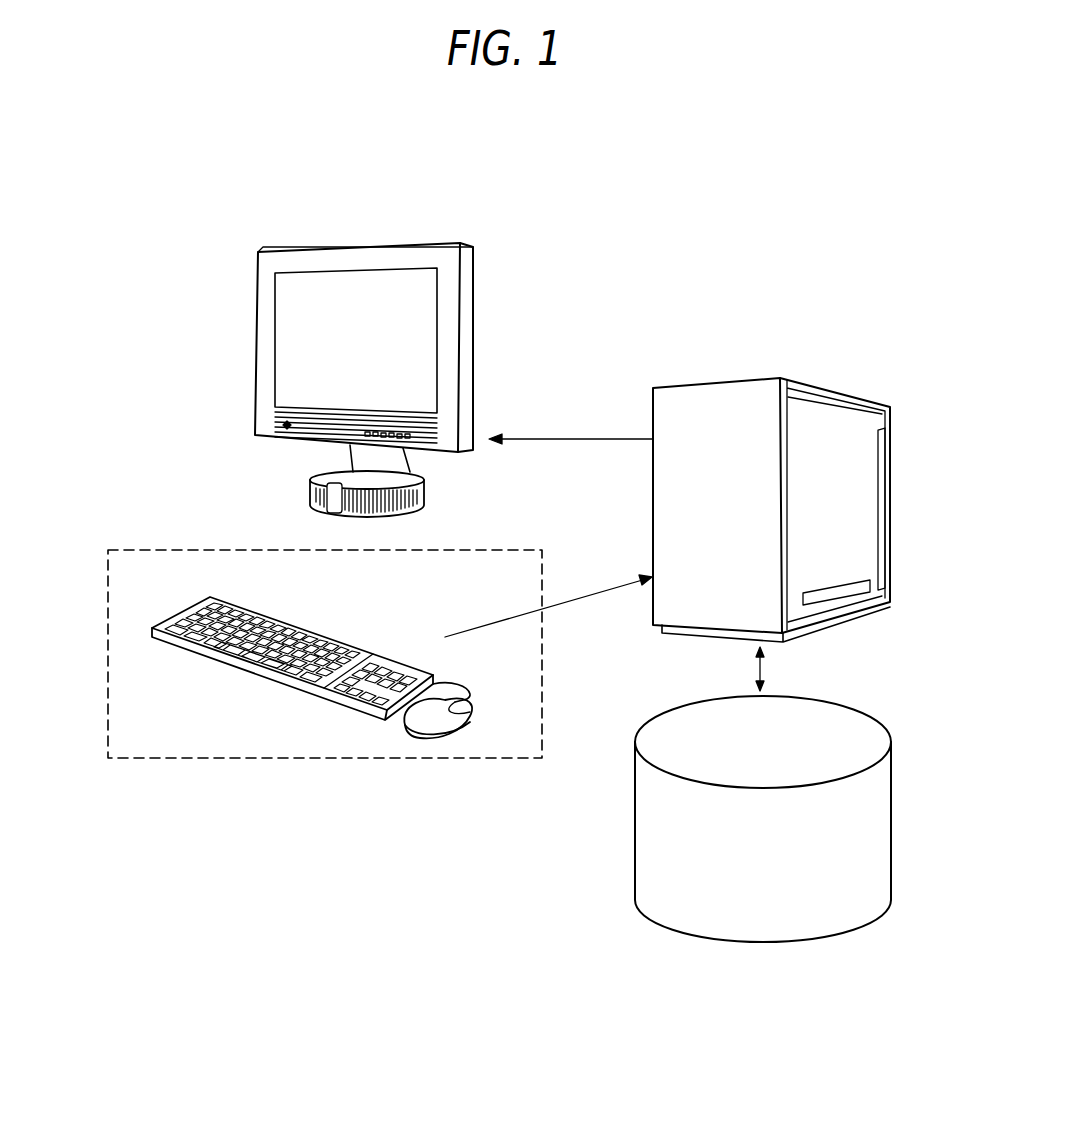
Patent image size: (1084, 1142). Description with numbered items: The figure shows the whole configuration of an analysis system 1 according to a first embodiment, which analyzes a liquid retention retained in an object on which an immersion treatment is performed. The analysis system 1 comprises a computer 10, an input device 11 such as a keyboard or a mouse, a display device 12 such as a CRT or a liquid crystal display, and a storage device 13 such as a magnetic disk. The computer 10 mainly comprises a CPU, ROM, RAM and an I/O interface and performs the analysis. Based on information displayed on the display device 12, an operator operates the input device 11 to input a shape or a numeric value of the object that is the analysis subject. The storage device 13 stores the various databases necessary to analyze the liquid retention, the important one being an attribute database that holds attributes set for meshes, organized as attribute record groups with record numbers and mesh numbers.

The analysis system 1 is at (690, 223).
The computer 10 is at (725, 378).
The input device 11 is at (108, 658).
The display device 12 is at (255, 348).
The storage device 13 is at (892, 820).